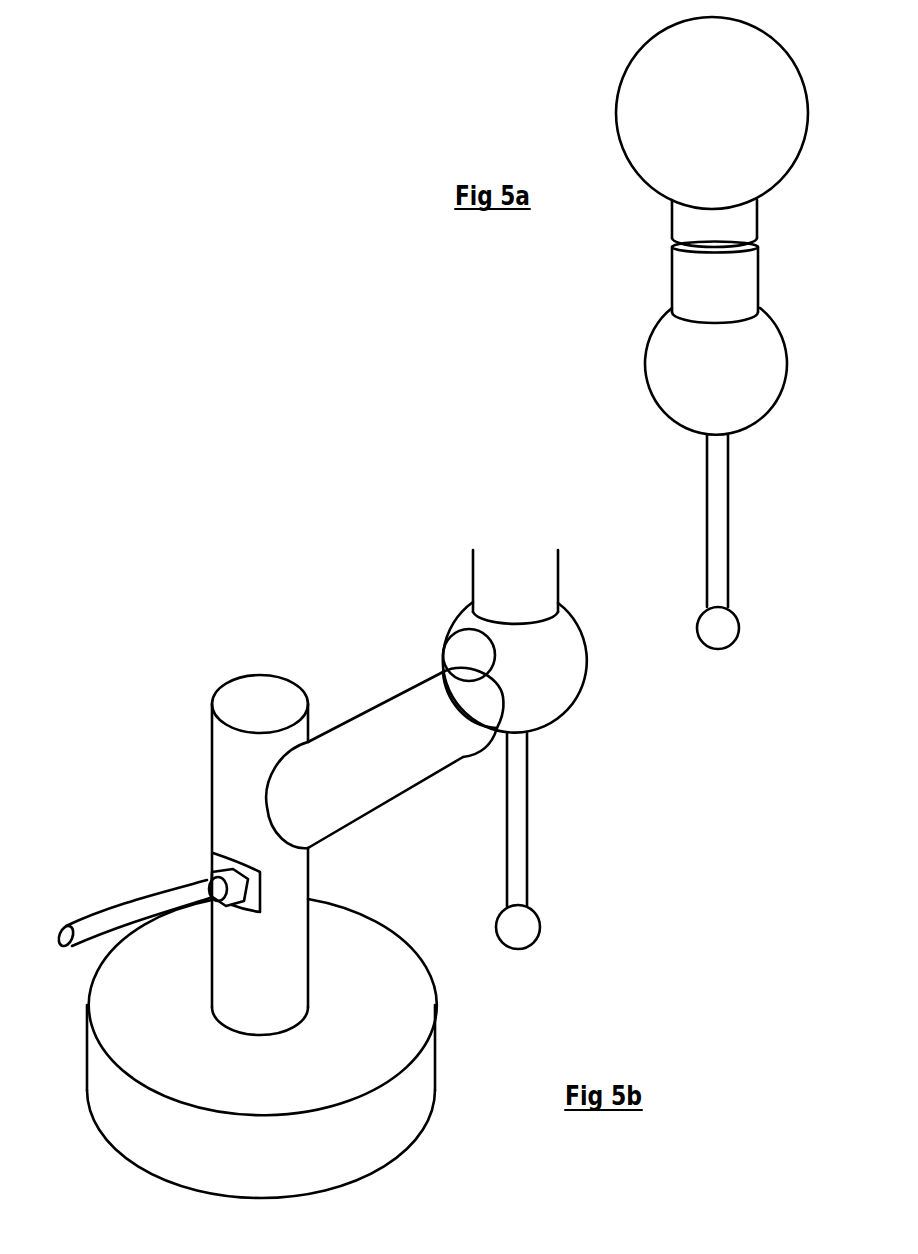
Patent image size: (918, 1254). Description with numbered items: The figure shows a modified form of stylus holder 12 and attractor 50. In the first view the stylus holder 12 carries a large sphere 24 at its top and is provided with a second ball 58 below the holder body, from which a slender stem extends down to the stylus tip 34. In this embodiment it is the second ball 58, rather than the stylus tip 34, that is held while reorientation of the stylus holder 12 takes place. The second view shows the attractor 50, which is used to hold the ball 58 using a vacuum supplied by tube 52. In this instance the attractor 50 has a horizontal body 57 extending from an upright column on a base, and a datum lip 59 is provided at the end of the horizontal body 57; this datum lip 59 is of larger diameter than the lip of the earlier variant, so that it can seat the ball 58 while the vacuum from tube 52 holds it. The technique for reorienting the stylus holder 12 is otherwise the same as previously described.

In FIG. 5A, the stylus holder 12 is at (610, 270).
In FIG. 5A, the sphere 24 is at (635, 99).
In FIG. 5A, the stylus tip 34 is at (717, 615).
In FIG. 5B, the attractor 50 is at (203, 663).
In FIG. 5B, the tube 52 is at (178, 898).
In FIG. 5B, the horizontal body 57 is at (393, 786).
In FIG. 5A, the second ball 58 is at (682, 383).
In FIG. 5B, the second ball 58 is at (557, 695).
In FIG. 5B, the datum lip 59 is at (465, 623).